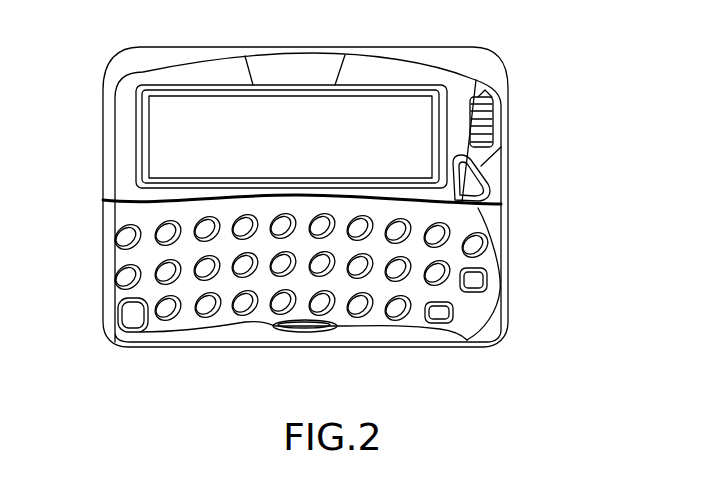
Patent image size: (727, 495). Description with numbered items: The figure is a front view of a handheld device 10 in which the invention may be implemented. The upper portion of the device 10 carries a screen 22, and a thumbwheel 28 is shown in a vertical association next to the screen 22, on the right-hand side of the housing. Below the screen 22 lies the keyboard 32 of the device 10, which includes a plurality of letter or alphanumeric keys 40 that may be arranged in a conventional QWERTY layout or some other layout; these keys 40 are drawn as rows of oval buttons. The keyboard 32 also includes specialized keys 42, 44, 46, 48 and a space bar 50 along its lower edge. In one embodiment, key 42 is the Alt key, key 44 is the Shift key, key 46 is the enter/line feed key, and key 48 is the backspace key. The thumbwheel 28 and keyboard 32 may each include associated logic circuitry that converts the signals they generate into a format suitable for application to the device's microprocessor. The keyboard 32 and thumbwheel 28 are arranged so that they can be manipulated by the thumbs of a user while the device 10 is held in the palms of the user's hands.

The handheld device 10 is at (492, 70).
The screen 22 is at (170, 135).
The thumbwheel 28 is at (493, 122).
The keyboard 32 is at (123, 217).
The alphanumeric keys 40 is at (476, 245).
The Alt key 42 is at (132, 312).
The Shift key 44 is at (440, 312).
The enter/line feed key 46 is at (477, 281).
The backspace key 48 is at (473, 183).
The space bar 50 is at (305, 329).